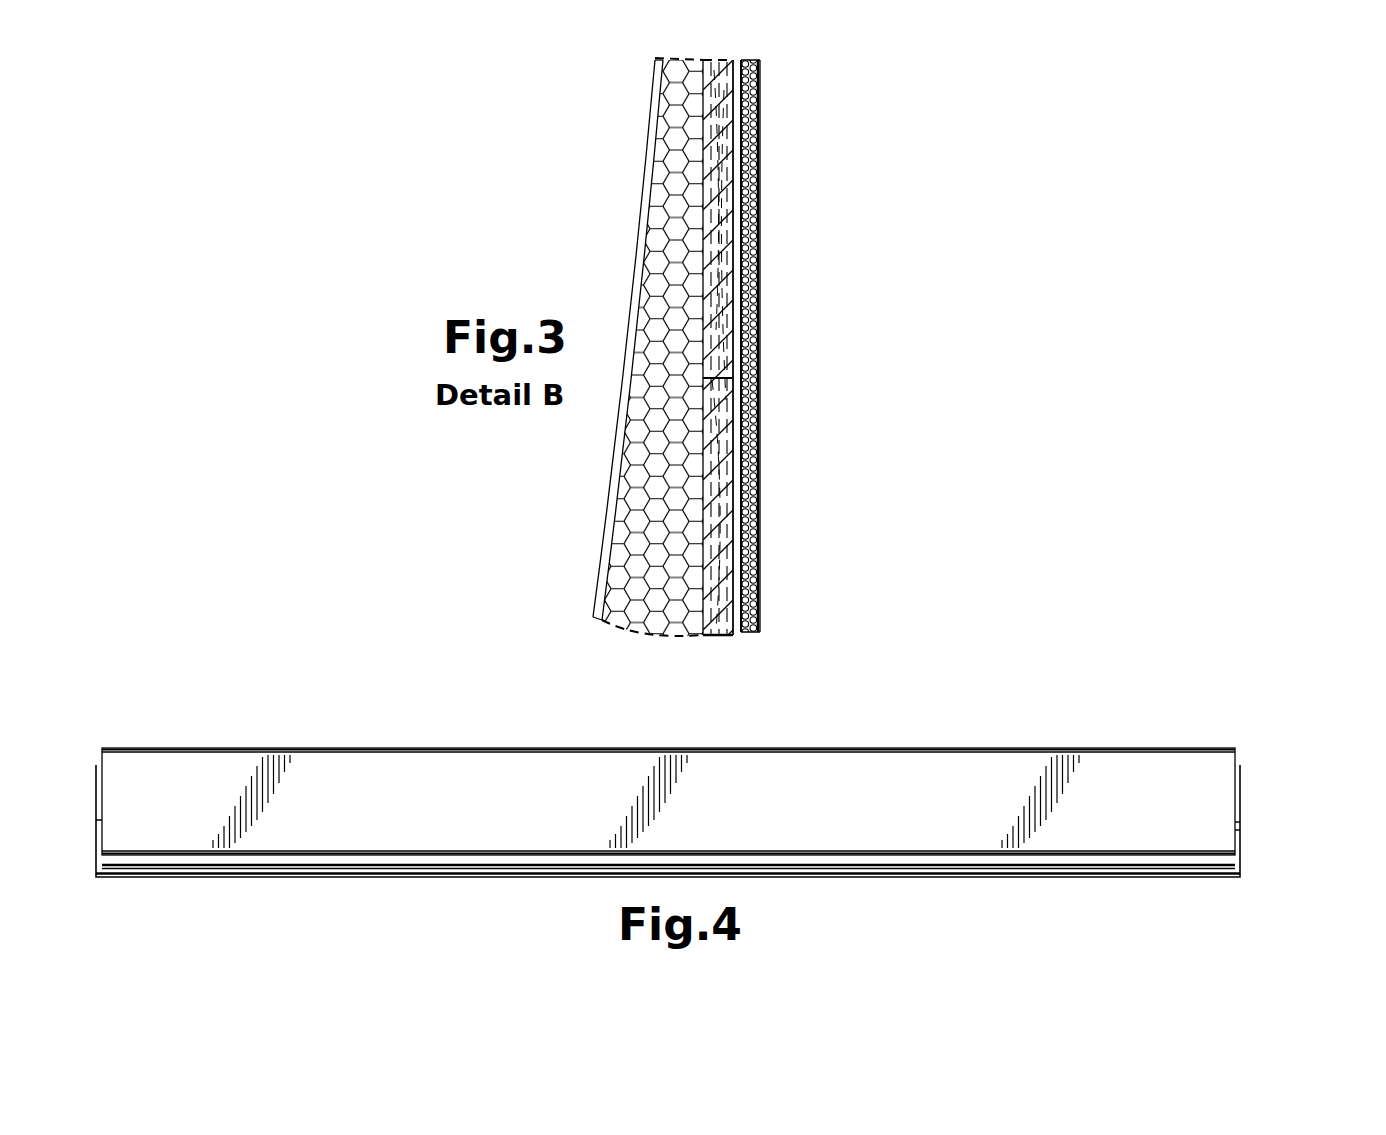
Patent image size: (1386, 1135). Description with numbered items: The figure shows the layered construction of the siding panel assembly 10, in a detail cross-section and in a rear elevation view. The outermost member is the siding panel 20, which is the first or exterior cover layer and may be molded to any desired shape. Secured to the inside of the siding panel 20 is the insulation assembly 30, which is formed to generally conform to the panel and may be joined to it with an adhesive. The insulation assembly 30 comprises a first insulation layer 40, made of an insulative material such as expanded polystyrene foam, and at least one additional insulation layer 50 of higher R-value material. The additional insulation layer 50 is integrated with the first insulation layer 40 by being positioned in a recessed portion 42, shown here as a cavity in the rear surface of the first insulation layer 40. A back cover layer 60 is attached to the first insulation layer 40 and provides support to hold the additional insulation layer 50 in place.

In FIG. 3, the siding panel assembly 10 is at (830, 134).
In FIG. 4, the siding panel assembly 10 is at (150, 726).
In FIG. 3, the siding panel 20 is at (648, 246).
In FIG. 4, the siding panel 20 is at (1241, 781).
In FIG. 3, the insulation assembly 30 is at (676, 648).
In FIG. 3, the first insulation layer 40 is at (636, 628).
In FIG. 3, the recessed portion 42 is at (696, 167).
In FIG. 3, the additional insulation layer 50 is at (728, 642).
In FIG. 3, the back cover layer 60 is at (770, 288).
In FIG. 4, the back cover layer 60 is at (1243, 834).